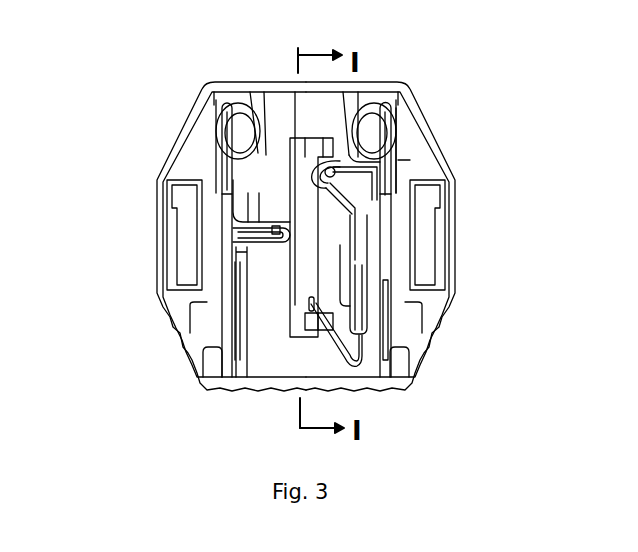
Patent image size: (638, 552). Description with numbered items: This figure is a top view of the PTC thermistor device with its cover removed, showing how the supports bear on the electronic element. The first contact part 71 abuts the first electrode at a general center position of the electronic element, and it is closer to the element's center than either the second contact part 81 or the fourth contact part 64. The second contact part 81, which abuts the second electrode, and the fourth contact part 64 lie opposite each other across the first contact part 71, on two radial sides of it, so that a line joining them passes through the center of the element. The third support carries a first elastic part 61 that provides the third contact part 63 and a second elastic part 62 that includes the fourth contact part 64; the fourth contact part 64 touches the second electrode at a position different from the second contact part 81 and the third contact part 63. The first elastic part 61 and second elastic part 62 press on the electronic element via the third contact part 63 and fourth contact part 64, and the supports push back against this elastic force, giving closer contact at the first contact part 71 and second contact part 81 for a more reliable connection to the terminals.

The first elastic part 61 is at (332, 194).
The second elastic part 62 is at (345, 341).
The third contact part 63 is at (320, 178).
The fourth contact part 64 is at (312, 305).
The first contact part 71 is at (230, 230).
The second contact part 81 is at (355, 146).